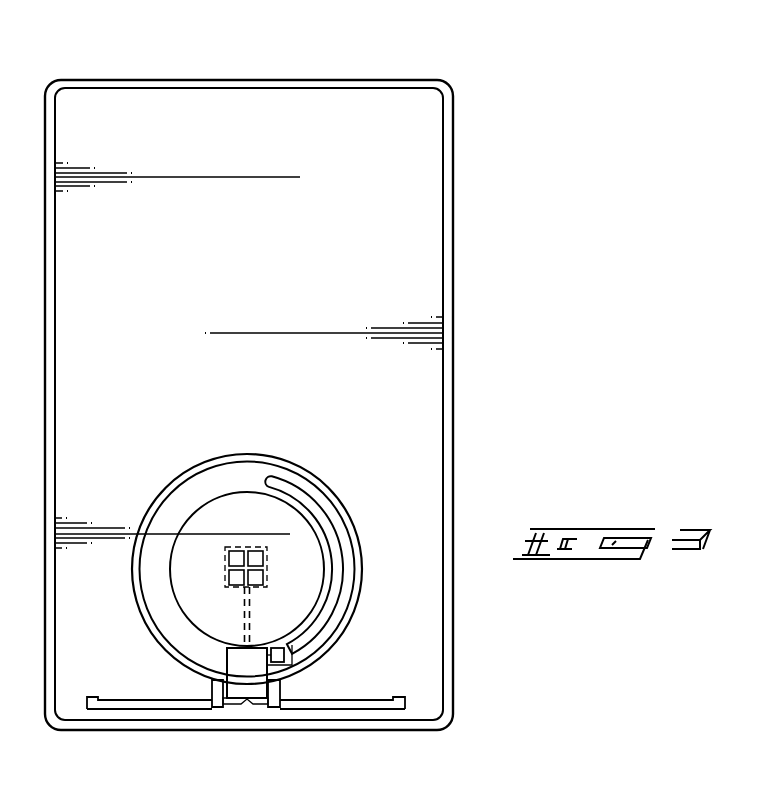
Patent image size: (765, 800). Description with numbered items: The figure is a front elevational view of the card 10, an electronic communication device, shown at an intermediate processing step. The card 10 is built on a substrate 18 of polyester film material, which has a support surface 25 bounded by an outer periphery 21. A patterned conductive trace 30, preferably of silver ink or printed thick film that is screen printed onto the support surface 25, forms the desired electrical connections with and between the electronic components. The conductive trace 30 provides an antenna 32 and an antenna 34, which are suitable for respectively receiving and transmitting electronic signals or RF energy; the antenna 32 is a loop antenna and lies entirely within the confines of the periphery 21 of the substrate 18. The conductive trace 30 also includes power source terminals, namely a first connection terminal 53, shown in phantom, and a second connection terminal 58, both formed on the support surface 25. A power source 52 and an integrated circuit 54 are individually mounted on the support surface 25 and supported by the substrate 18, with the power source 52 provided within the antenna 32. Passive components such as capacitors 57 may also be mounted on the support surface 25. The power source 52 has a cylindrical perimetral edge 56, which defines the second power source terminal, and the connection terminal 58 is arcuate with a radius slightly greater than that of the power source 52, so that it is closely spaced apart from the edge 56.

The card 10 is at (518, 95).
The substrate 18 is at (138, 80).
The outer periphery 21 is at (303, 74).
The support surface 25 is at (262, 286).
The patterned conductive trace 30 is at (195, 432).
The antenna 32 is at (320, 462).
The antenna 34 is at (118, 720).
The power source 52 is at (192, 500).
The first connection terminal 53 is at (267, 565).
The integrated circuit 54 is at (246, 712).
The perimetral edge 56 is at (170, 576).
The capacitors 57 is at (284, 655).
The second connection terminal 58 is at (330, 525).